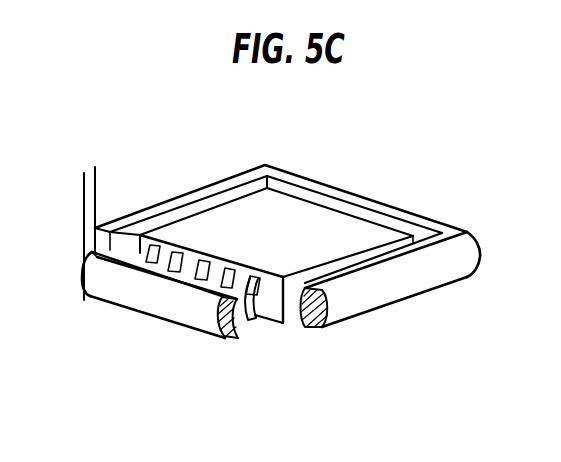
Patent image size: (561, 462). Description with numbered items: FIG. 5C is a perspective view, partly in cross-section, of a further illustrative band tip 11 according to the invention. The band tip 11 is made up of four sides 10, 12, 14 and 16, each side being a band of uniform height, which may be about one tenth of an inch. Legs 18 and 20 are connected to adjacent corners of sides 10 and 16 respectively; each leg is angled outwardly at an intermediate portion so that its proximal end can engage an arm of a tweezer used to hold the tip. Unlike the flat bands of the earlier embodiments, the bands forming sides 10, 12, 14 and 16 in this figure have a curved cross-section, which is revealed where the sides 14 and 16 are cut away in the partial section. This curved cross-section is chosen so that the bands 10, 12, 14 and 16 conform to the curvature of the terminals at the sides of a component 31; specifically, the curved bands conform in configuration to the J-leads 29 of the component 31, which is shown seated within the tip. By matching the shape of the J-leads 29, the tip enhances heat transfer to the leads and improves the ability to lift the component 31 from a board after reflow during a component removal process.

The side 10 is at (190, 190).
The band tip 11 is at (387, 182).
The side 12 is at (310, 179).
The side 14 is at (385, 288).
The side 16 is at (132, 285).
The leg 18 is at (83, 207).
The leg 20 is at (96, 192).
The J-leads 29 is at (242, 322).
The component 31 is at (335, 240).